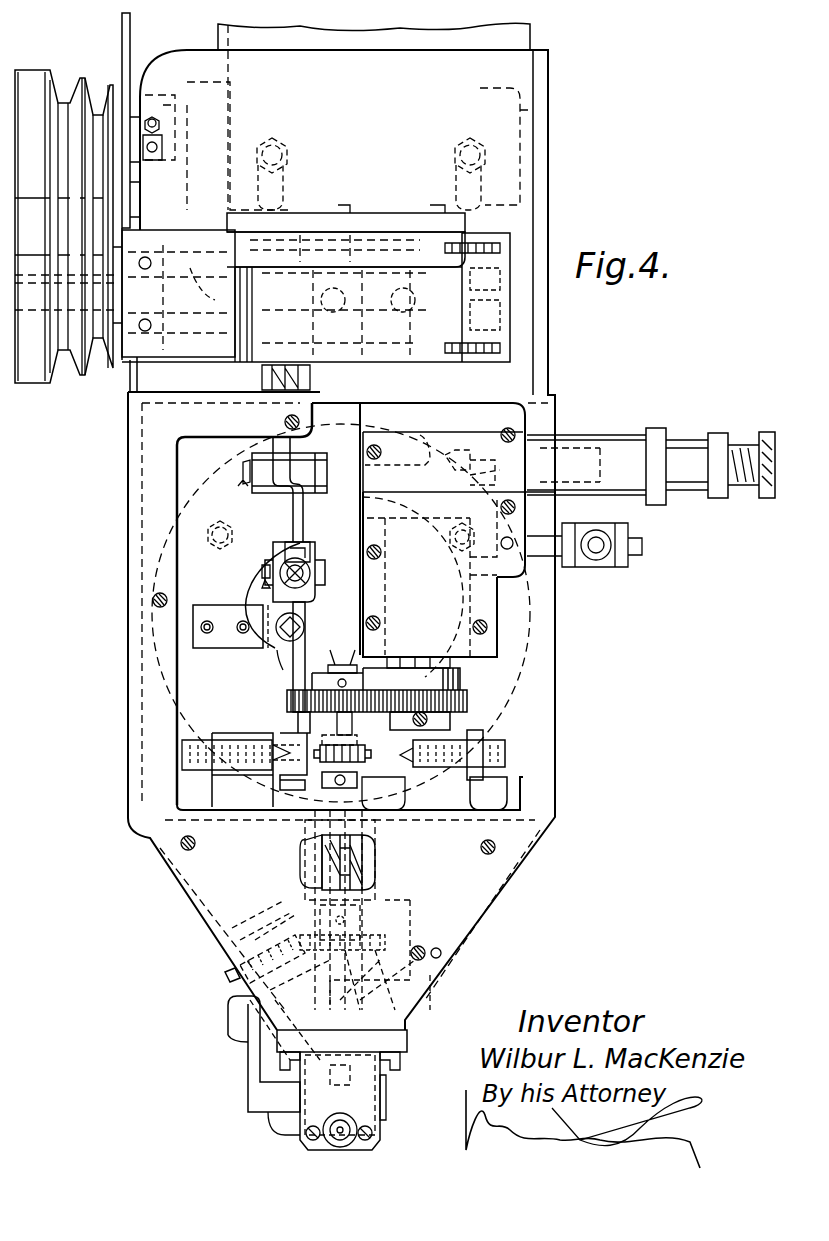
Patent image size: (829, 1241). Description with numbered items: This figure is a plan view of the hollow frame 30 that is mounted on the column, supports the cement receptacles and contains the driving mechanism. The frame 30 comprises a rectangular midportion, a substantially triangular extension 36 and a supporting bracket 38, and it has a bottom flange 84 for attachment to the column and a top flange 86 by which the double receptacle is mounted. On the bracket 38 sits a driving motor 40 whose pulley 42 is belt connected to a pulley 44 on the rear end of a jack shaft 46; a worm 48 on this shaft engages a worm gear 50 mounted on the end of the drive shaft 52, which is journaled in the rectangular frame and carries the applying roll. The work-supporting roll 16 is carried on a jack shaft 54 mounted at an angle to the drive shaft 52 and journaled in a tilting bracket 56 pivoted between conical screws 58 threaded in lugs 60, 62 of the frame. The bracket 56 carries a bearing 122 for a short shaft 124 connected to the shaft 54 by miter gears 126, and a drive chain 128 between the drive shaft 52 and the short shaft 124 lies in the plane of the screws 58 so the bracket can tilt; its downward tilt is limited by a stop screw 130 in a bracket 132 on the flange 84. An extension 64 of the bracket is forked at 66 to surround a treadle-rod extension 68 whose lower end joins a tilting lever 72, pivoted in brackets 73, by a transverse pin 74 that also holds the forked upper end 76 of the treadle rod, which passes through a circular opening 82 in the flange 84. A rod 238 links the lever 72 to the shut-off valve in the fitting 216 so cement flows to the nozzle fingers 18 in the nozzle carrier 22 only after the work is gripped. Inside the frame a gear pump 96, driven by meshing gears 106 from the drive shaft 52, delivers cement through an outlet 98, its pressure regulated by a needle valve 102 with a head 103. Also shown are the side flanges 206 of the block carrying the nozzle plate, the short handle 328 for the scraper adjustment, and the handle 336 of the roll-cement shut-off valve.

The frame 30 is at (556, 752).
The supporting bracket 38 is at (548, 232).
The driving motor 40 is at (530, 52).
The pulley 42 is at (95, 78).
The pulley 44 is at (82, 390).
The jack shaft 46 is at (190, 268).
The worm 48 is at (370, 322).
The worm gear 50 is at (412, 232).
The drive shaft 52 is at (355, 435).
The jack shaft 54 is at (268, 992).
The tilting bracket 56 is at (420, 905).
The conical screws 58 is at (490, 748).
The lug 60 is at (452, 796).
The lug 62 is at (260, 802).
The extension 64 is at (292, 722).
The forked end 66 is at (310, 597).
The treadle-rod extension 68 is at (307, 570).
The tilting lever 72 is at (296, 500).
The brackets 73 is at (255, 470).
The transverse pin 74 is at (262, 568).
The forked upper end 76 is at (312, 540).
The circular opening 82 is at (262, 565).
The bottom flange 84 is at (480, 686).
The top flange 86 is at (177, 548).
The gear pump 96 is at (555, 606).
The outlet 98 is at (540, 545).
The needle valve 102 is at (462, 460).
The head 103 is at (762, 432).
The meshing gears 106 is at (355, 749).
The bearing 122 is at (350, 860).
The short shaft 124 is at (395, 885).
The miter gears 126 is at (300, 925).
The drive chain 128 is at (265, 765).
The stop screw 130 is at (278, 645).
The bracket 132 is at (262, 612).
The side flanges 206 is at (395, 1048).
The fitting 216 is at (325, 1138).
The rod 238 is at (266, 378).
The supporting roll 16 is at (275, 1094).
The nozzle fingers 18 is at (342, 1140).
The nozzle carrier 22 is at (372, 1140).
The short handle 328 is at (275, 1126).
The handle 336 is at (240, 1015).
The triangular extension 36 is at (435, 928).